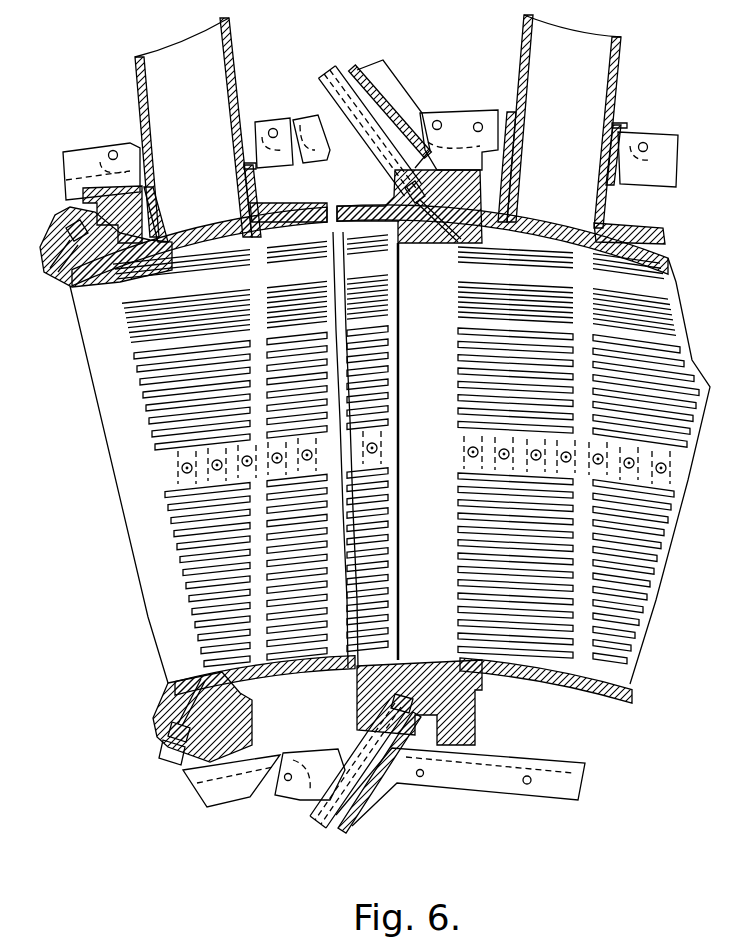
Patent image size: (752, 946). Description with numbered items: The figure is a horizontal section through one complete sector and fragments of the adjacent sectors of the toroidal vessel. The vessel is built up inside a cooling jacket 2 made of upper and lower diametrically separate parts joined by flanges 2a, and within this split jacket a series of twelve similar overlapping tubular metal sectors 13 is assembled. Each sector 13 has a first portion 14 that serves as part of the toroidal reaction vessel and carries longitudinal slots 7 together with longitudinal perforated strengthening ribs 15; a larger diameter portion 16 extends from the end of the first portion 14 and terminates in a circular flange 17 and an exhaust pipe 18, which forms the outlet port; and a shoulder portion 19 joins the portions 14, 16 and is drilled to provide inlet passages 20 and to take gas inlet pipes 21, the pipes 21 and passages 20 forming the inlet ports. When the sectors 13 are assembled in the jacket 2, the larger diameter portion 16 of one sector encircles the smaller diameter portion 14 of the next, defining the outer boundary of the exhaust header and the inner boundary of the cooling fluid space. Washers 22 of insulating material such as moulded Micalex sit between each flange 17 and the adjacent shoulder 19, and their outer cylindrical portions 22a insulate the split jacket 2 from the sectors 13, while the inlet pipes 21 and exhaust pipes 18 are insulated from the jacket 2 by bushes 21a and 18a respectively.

The cooling jacket 2 is at (270, 120).
The flanges 2a is at (92, 150).
The longitudinal slots 7 is at (157, 410).
The tubular metal sectors 13 is at (413, 223).
The first portion of sector 14 is at (213, 247).
The longitudinal perforated strengthening ribs 15 is at (177, 457).
The larger diameter portion 16 is at (272, 212).
The circular flange 17 is at (158, 220).
The exhaust pipe 18 is at (197, 86).
The bush 18a is at (249, 160).
The shoulder portion 19 is at (63, 267).
The inlet passages 20 is at (110, 267).
The gas inlet pipes 21 is at (328, 78).
The bush 21a is at (350, 68).
The washers 22 is at (110, 187).
The outer cylindrical portions of washers 22a is at (93, 193).